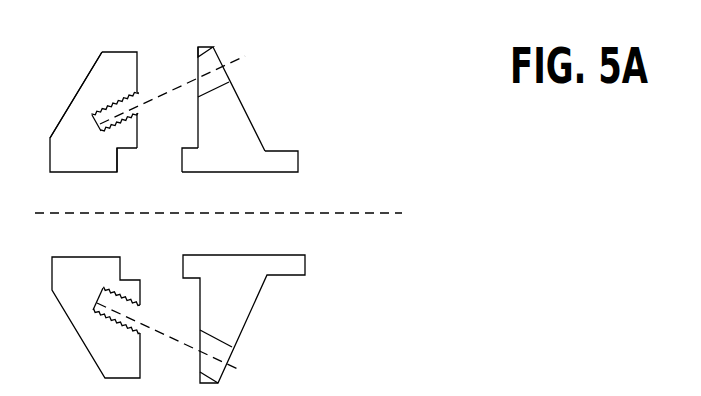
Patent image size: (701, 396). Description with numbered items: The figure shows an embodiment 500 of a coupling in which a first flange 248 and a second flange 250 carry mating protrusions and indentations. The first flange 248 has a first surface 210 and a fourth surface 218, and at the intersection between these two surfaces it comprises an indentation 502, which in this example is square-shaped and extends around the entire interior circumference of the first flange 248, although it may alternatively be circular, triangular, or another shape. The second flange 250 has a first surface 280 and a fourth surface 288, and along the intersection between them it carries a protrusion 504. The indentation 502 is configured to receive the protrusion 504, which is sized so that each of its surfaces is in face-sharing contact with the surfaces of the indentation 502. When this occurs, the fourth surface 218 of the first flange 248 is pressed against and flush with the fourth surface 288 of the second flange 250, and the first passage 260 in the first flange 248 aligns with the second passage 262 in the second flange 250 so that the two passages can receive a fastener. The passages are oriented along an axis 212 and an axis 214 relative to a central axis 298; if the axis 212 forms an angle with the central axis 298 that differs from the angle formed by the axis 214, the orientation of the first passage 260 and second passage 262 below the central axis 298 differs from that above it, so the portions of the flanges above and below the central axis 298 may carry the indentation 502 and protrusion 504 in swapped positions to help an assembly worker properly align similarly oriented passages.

The embodiment 500 is at (456, 154).
The first surface 210 is at (80, 173).
The first flange 248 is at (70, 103).
The first passage 260 is at (110, 105).
The fourth surface 218 is at (143, 119).
The indentation 502 is at (117, 164).
The protrusion 504 is at (182, 163).
The first surface 280 is at (228, 172).
The second flange 250 is at (252, 122).
The fourth surface 288 is at (198, 56).
The second passage 262 is at (228, 73).
The axis 214 is at (244, 55).
The axis 212 is at (252, 365).
The central axis 298 is at (402, 212).